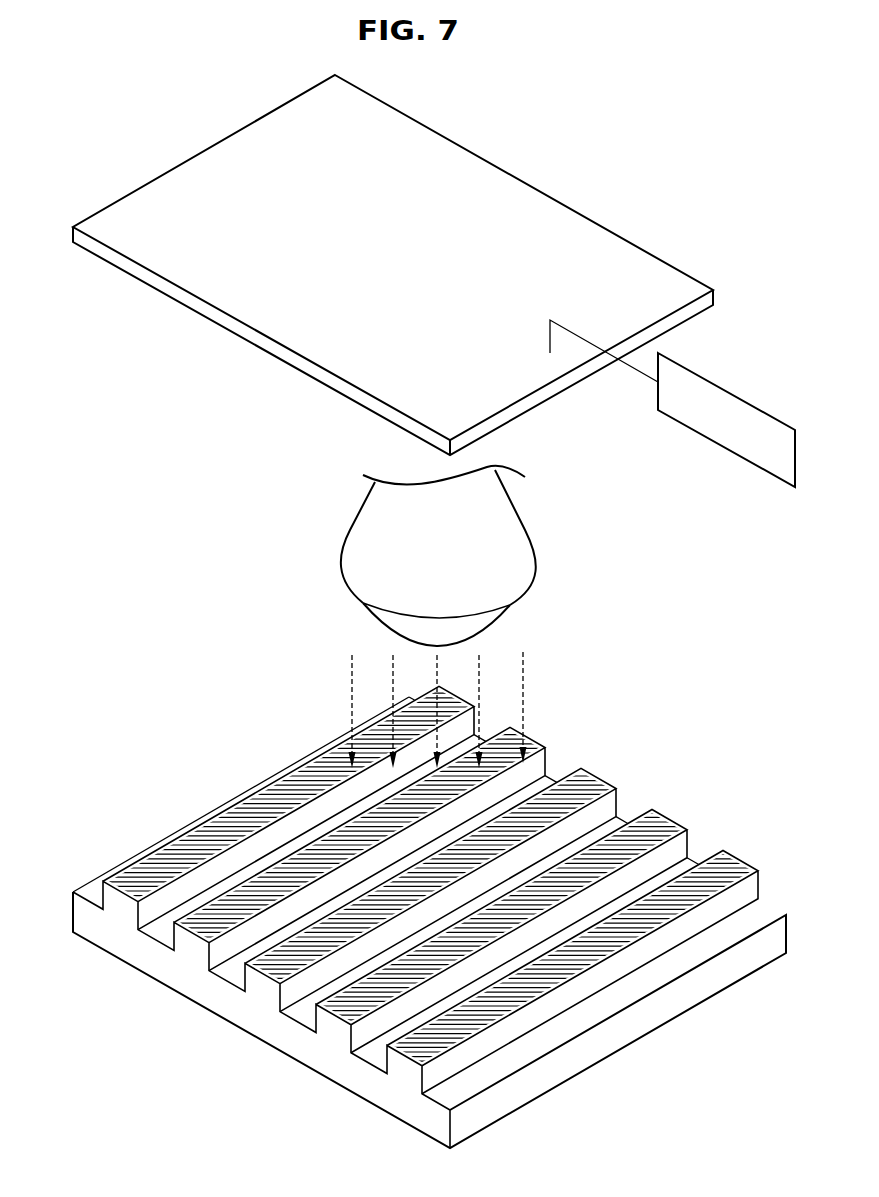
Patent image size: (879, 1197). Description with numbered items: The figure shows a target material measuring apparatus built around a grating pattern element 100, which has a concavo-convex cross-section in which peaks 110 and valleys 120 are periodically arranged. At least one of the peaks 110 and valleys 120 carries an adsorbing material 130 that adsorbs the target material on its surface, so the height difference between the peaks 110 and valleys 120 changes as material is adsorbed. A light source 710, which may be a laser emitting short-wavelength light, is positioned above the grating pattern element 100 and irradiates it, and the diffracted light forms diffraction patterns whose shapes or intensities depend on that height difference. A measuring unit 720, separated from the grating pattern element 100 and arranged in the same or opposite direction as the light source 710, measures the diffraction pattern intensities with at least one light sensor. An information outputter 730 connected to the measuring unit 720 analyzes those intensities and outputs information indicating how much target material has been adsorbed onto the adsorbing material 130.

The grating pattern element 100 is at (424, 916).
The peaks 110 is at (118, 908).
The valleys 120 is at (227, 977).
The adsorbing material 130 is at (642, 828).
The light source 710 is at (388, 622).
The measuring unit 720 is at (187, 298).
The information outputter 730 is at (720, 443).